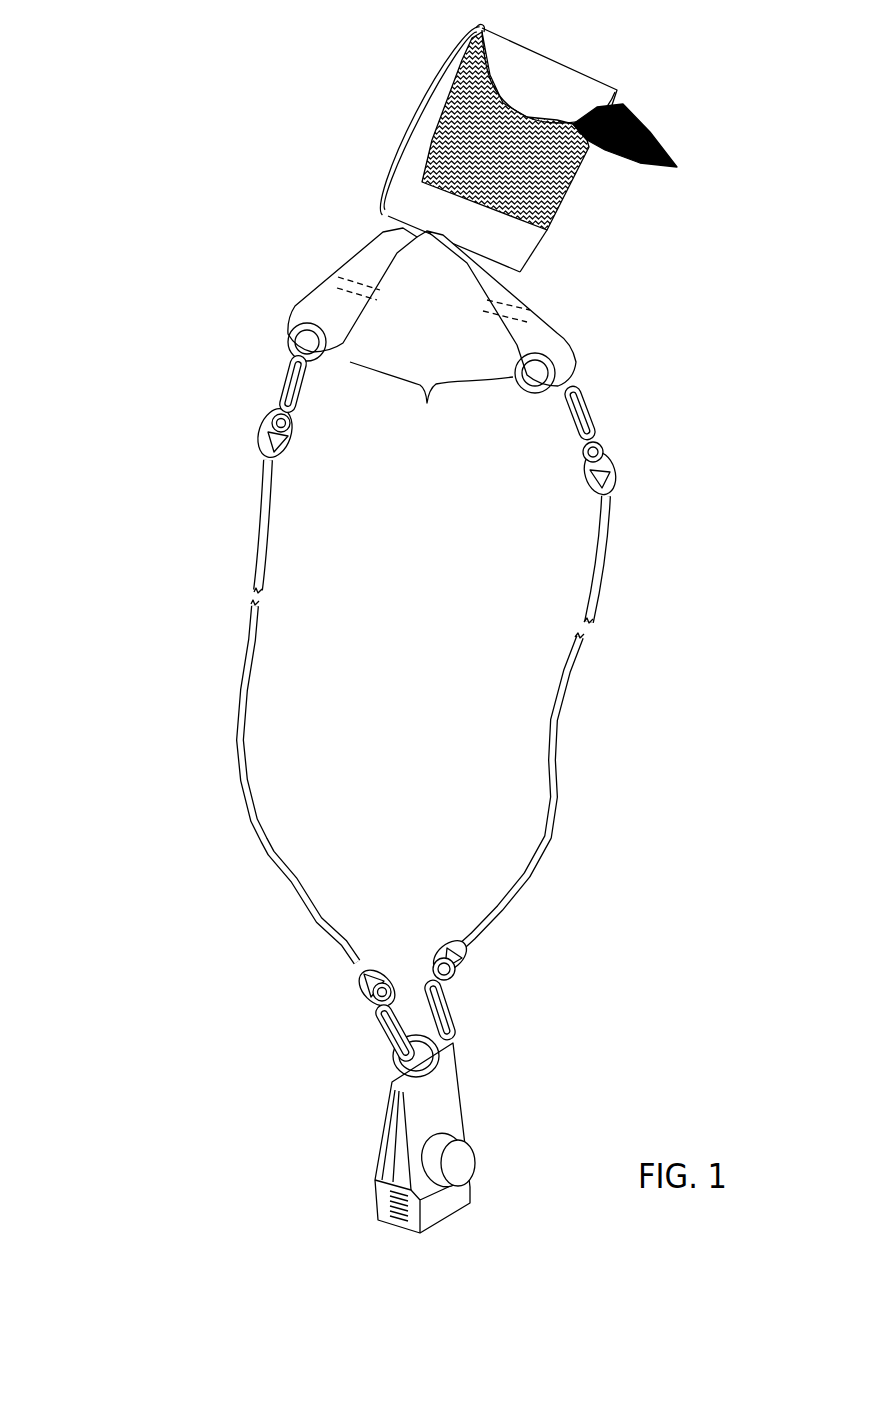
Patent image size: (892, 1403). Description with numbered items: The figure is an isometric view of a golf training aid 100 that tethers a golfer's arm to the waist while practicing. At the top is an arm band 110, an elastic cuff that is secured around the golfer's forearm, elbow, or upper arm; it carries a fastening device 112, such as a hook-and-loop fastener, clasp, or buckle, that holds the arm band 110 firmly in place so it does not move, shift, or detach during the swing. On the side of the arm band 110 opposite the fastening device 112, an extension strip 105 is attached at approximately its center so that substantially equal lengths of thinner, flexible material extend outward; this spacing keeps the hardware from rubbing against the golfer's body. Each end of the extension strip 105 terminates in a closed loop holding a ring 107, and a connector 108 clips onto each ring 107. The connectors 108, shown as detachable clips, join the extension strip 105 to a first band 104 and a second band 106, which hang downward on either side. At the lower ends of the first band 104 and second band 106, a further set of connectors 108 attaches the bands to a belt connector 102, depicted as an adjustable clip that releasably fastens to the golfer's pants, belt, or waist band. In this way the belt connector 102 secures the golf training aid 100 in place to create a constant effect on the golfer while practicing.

The golf training aid 100 is at (216, 117).
The belt connector 102 is at (443, 1105).
The first band 104 is at (610, 520).
The extension strip 105 is at (370, 245).
The second band 106 is at (247, 631).
The ring 107 is at (431, 398).
The connector 108 is at (294, 378).
The arm band 110 is at (450, 50).
The fastening device 112 is at (549, 200).